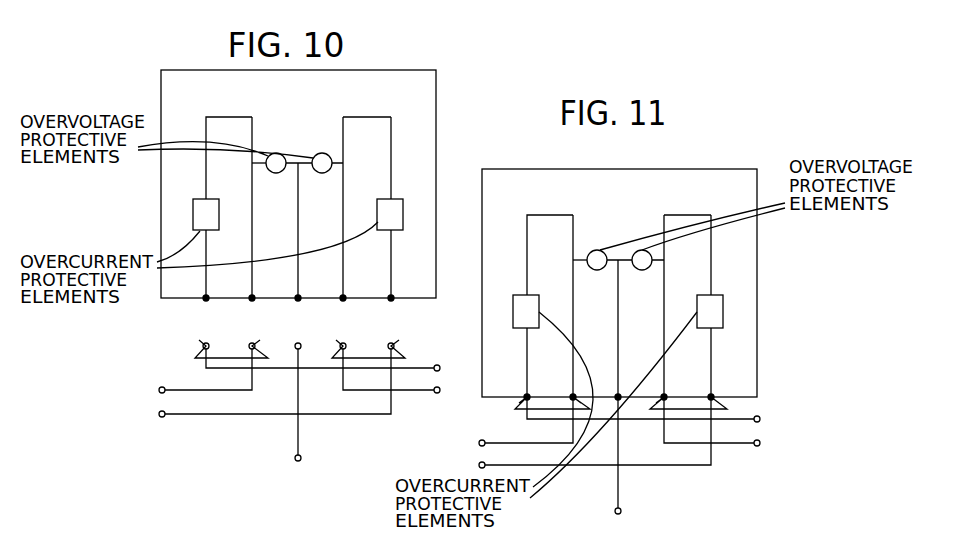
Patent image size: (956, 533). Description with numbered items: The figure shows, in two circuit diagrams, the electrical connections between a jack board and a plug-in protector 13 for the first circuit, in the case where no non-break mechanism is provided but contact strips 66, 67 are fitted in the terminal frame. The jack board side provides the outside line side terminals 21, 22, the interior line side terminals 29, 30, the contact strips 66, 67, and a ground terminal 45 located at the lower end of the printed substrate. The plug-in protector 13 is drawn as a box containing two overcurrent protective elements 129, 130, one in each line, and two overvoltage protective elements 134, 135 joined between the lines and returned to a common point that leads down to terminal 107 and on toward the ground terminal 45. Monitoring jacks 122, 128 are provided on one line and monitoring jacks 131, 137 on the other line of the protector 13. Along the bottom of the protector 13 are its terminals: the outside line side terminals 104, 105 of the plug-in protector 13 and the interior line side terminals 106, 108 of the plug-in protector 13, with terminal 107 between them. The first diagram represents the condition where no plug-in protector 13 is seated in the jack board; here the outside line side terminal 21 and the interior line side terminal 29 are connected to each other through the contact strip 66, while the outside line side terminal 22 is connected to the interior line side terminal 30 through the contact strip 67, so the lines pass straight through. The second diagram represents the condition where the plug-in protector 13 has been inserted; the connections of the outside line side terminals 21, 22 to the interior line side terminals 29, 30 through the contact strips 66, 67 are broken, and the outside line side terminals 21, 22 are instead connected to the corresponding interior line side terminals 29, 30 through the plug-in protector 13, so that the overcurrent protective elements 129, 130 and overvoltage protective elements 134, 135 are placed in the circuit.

In FIG. 10, the plug-in protector 13 is at (438, 131).
In FIG. 11, the plug-in protector 13 is at (758, 255).
In FIG. 10, the monitoring jack 122 is at (215, 112).
In FIG. 11, the monitoring jack 122 is at (540, 207).
In FIG. 10, the monitoring jack 128 is at (236, 112).
In FIG. 11, the monitoring jack 128 is at (562, 207).
In FIG. 10, the monitoring jack 137 is at (355, 112).
In FIG. 11, the monitoring jack 137 is at (678, 207).
In FIG. 10, the monitoring jack 131 is at (370, 113).
In FIG. 11, the monitoring jack 131 is at (697, 210).
In FIG. 10, the overvoltage protective element 135 is at (276, 173).
In FIG. 11, the overvoltage protective element 135 is at (597, 270).
In FIG. 10, the overvoltage protective element 134 is at (322, 173).
In FIG. 11, the overvoltage protective element 134 is at (642, 270).
In FIG. 10, the overcurrent protective element 129 is at (218, 227).
In FIG. 11, the overcurrent protective element 129 is at (539, 322).
In FIG. 10, the overcurrent protective element 130 is at (403, 226).
In FIG. 11, the overcurrent protective element 130 is at (723, 322).
In FIG. 10, the interior line side terminal of the plug-in protector 106 is at (219, 310).
In FIG. 10, the outside line side terminal of the plug-in protector 104 is at (262, 310).
In FIG. 10, the module ground terminal 107 is at (301, 310).
In FIG. 10, the interior line side terminal of the plug-in protector 108 is at (347, 310).
In FIG. 10, the outside line side terminal of the plug-in protector 105 is at (397, 310).
In FIG. 10, the contact strip 66 is at (202, 347).
In FIG. 11, the contact strip 66 is at (518, 405).
In FIG. 10, the contact strip 67 is at (397, 350).
In FIG. 11, the contact strip 67 is at (727, 406).
In FIG. 10, the interior line side terminal 29 is at (439, 365).
In FIG. 11, the interior line side terminal 29 is at (759, 423).
In FIG. 10, the interior line side terminal 30 is at (440, 393).
In FIG. 11, the interior line side terminal 30 is at (759, 446).
In FIG. 10, the outside line side terminal 21 is at (163, 388).
In FIG. 11, the outside line side terminal 21 is at (480, 443).
In FIG. 10, the outside line side terminal 22 is at (273, 395).
In FIG. 11, the outside line side terminal 22 is at (479, 466).
In FIG. 10, the ground terminal 45 is at (302, 459).
In FIG. 11, the ground terminal 45 is at (622, 511).